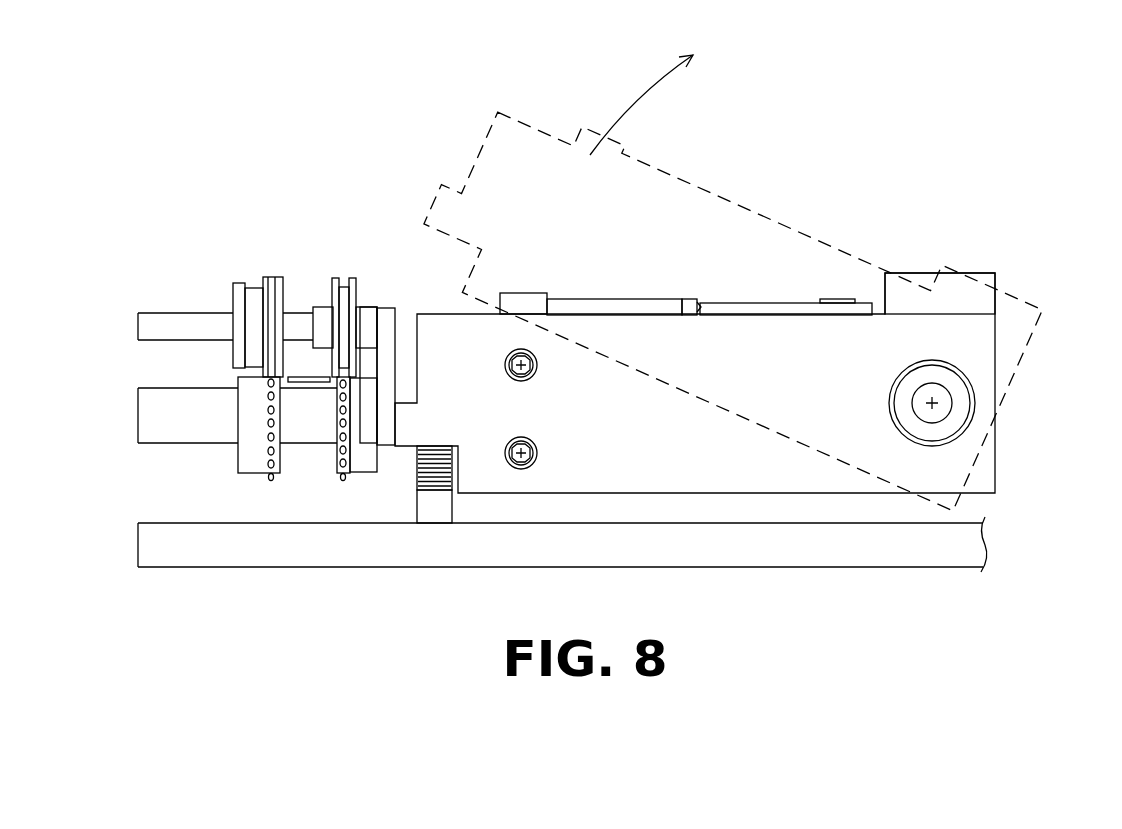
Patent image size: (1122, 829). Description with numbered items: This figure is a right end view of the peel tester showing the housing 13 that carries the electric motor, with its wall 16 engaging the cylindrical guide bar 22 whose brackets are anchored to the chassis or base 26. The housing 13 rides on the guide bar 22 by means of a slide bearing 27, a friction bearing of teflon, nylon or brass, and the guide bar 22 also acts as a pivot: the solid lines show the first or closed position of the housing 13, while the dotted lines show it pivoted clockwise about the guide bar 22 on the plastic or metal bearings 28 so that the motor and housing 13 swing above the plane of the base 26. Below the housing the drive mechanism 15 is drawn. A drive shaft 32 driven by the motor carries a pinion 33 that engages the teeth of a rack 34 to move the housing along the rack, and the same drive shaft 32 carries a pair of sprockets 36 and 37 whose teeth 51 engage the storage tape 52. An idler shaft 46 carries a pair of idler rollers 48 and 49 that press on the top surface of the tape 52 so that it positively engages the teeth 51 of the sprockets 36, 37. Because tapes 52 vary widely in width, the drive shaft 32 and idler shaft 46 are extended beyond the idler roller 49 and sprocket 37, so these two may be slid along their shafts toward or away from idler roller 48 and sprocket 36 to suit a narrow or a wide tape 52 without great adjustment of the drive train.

The housing 13 is at (995, 462).
The pulley and carriage assembly 15 is at (300, 271).
The wall 16 is at (618, 205).
The guide bar 22 is at (952, 401).
The chassis or base 26 is at (723, 568).
The slide bearing 27 is at (898, 373).
The bearing 28 is at (894, 405).
The drive shaft 32 is at (136, 418).
The pinion 33 is at (430, 478).
The rack 34 is at (436, 508).
The sprocket 36 is at (362, 478).
The sprocket 37 is at (253, 477).
The idler shaft 46 is at (172, 325).
The idler roller 48 is at (352, 290).
The idler roller 49 is at (268, 283).
The teeth 51 is at (270, 481).
The storage tape 52 is at (311, 378).